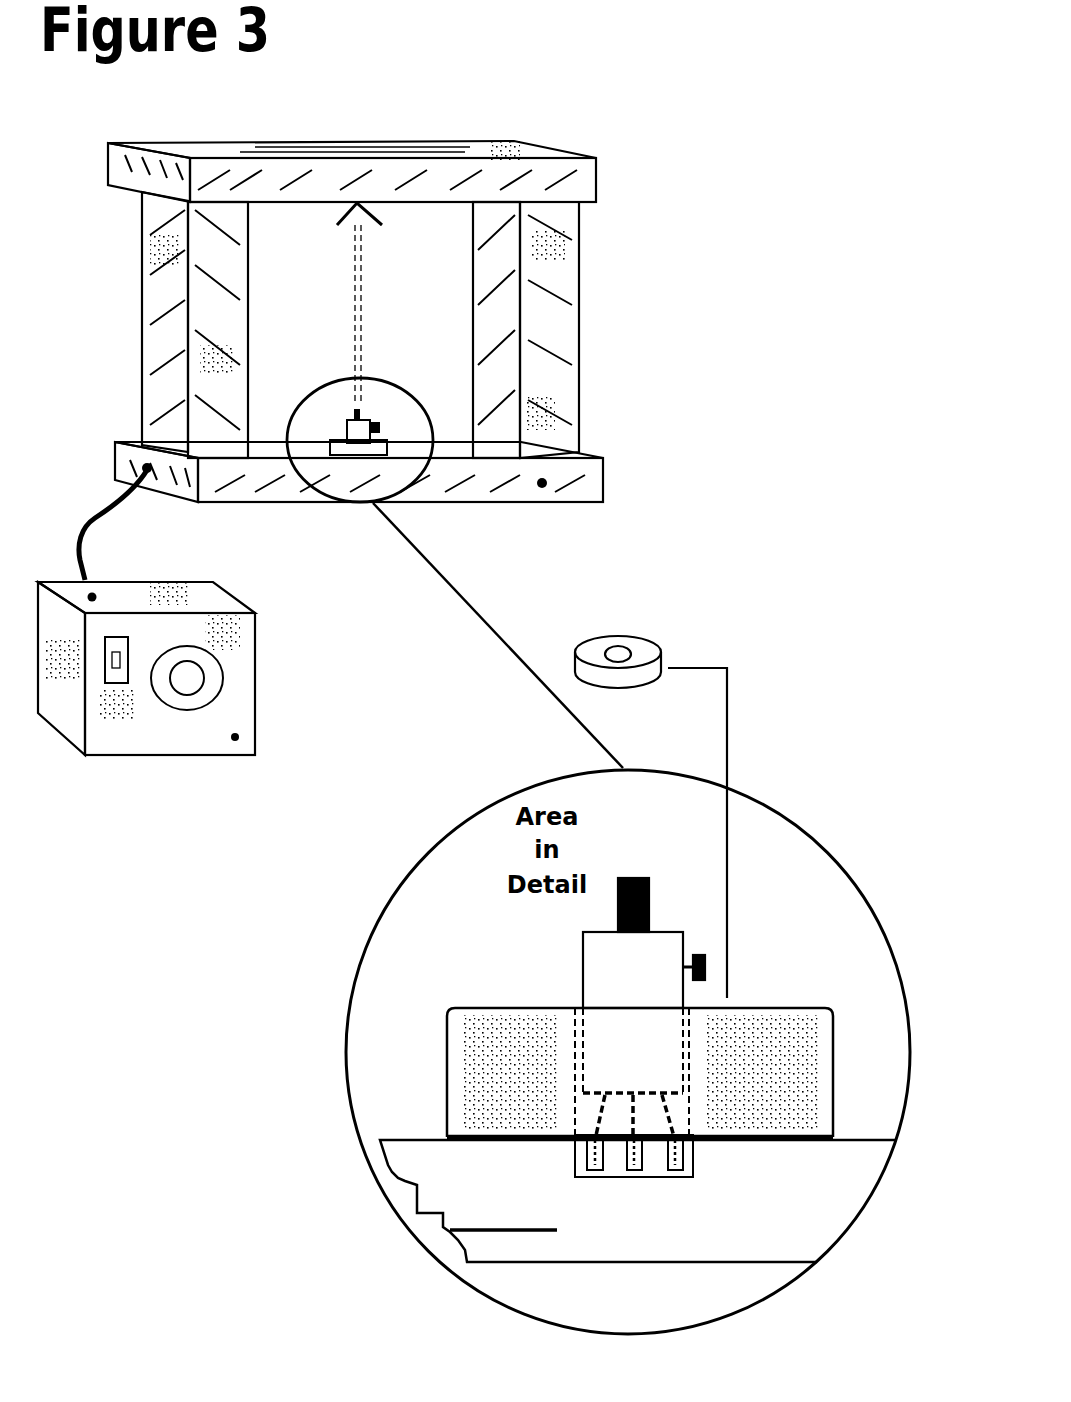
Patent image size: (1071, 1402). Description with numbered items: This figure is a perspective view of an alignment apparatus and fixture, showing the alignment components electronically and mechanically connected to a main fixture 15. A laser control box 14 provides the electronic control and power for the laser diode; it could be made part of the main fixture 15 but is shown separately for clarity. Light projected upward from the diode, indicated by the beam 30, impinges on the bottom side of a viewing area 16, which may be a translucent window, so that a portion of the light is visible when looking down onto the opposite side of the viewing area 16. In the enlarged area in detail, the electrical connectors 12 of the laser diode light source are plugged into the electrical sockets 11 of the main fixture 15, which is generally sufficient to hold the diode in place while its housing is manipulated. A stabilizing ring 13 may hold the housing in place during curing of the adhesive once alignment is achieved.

The electrical sockets 11 is at (703, 1168).
The electrical connectors 12 is at (675, 1167).
The stabilizing ring 13 is at (637, 645).
The laser control box 14 is at (97, 763).
The main fixture 15 is at (585, 405).
The viewing area 16 is at (337, 150).
The light beam 30 is at (367, 273).